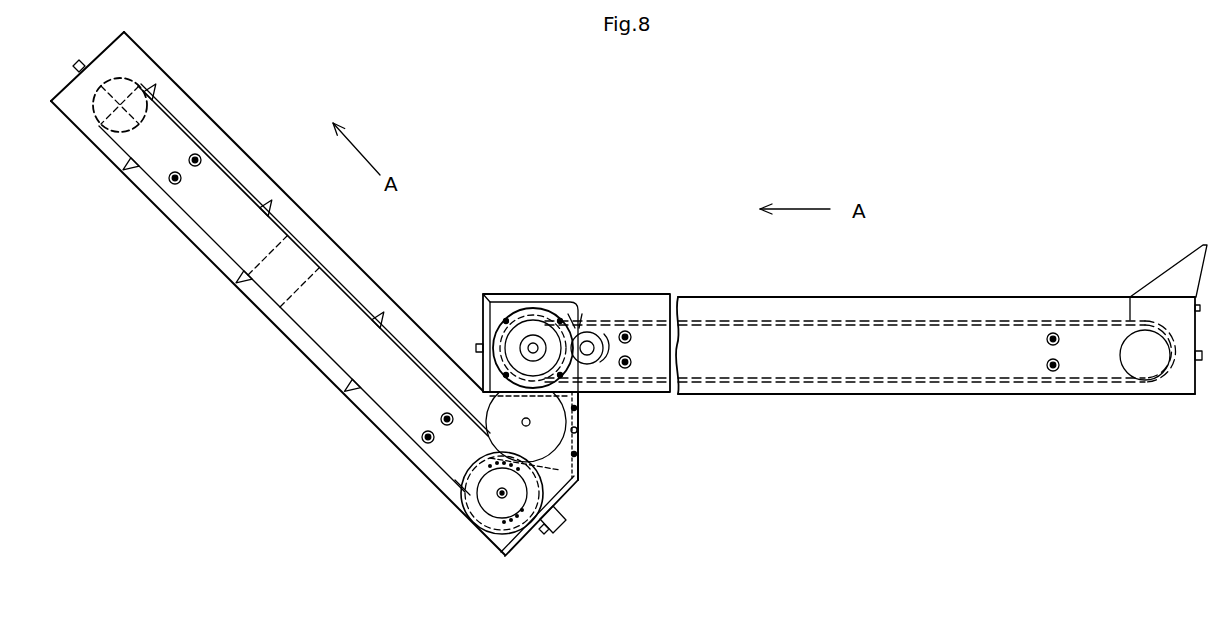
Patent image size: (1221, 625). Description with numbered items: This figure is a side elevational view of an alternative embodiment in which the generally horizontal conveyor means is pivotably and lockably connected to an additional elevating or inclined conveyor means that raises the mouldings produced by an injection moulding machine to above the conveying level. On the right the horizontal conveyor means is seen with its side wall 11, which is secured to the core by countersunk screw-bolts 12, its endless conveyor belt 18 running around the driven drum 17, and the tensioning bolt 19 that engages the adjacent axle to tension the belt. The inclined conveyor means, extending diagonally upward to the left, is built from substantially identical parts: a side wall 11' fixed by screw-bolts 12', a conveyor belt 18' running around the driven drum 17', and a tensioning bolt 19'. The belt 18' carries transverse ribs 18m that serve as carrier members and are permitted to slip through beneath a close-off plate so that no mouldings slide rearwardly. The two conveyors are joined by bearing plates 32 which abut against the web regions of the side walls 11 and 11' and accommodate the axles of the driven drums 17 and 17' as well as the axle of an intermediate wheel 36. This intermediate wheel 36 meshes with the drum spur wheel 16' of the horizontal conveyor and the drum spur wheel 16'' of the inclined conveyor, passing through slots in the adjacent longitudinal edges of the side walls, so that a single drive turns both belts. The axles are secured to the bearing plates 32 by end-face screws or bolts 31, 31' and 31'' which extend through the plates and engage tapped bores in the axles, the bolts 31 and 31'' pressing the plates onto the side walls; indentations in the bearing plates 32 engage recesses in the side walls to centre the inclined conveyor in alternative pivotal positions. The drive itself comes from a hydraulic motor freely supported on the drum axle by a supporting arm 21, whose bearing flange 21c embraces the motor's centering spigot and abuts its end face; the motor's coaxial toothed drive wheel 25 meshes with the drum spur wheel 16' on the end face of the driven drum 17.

The side wall 11 is at (941, 313).
The side wall of the inclined conveyor means 11' is at (278, 293).
The screw-bolts 12 is at (839, 345).
The screw-bolts of the inclined conveyor means 12' is at (305, 301).
The drum spur wheel 16' is at (576, 356).
The drum spur wheel of the inclined conveyor means 16'' is at (534, 493).
The driven drum 17 is at (875, 320).
The driven drum of the inclined conveyor means 17' is at (354, 276).
The conveyor belt 18 is at (860, 381).
The conveyor belt of the inclined conveyor means 18' is at (280, 313).
The transverse ribs 18m is at (288, 236).
The tensioning bolt 19 is at (817, 373).
The tensioning bolt of the inclined conveyor means 19' is at (329, 302).
The supporting arm 21 is at (575, 318).
The bearing flange 21c is at (597, 366).
The toothed drive wheel 25 is at (603, 330).
The screw or bolt 31 is at (533, 321).
The screw or bolt 31' is at (558, 438).
The screw or bolt 31'' is at (490, 502).
The bearing plates 32 is at (500, 301).
The intermediate wheel 36 is at (572, 433).